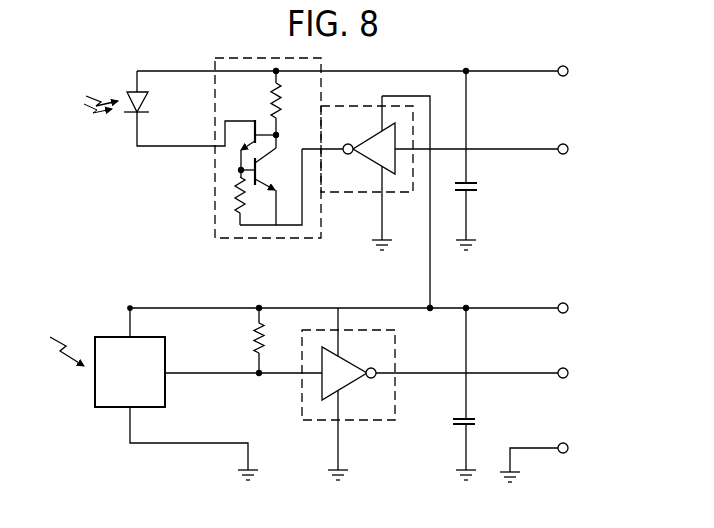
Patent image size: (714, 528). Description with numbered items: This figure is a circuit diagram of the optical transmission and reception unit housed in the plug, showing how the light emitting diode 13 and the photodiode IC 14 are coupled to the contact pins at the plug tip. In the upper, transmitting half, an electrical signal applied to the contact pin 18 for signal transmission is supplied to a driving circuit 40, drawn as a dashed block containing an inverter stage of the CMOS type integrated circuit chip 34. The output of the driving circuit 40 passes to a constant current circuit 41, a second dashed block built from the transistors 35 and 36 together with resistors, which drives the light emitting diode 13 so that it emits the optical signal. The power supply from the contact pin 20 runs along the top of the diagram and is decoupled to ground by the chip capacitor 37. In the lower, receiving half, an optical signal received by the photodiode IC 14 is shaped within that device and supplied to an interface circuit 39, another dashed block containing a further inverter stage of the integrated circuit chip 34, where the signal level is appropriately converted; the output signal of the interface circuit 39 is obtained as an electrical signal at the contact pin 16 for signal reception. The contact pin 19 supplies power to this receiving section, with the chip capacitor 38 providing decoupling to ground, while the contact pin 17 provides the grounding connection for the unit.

The light emitting diode 13 is at (127, 92).
The photodiode IC 14 is at (118, 409).
The contact pin for signal reception 16 is at (563, 368).
The contact pin for grounding 17 is at (563, 443).
The contact pin for signal transmission 18 is at (563, 144).
The contact pin for supplying power 19 is at (563, 303).
The contact pin for supplying power 20 is at (563, 66).
The CMOS type integrated circuit chip 34 is at (365, 138).
The transistor 35 is at (253, 121).
The transistor 36 is at (262, 171).
The chip capacitor 37 is at (478, 187).
The chip capacitor 38 is at (477, 420).
The interface circuit 39 is at (396, 400).
The driving circuit 40 is at (360, 100).
The constant current circuit 41 is at (278, 53).